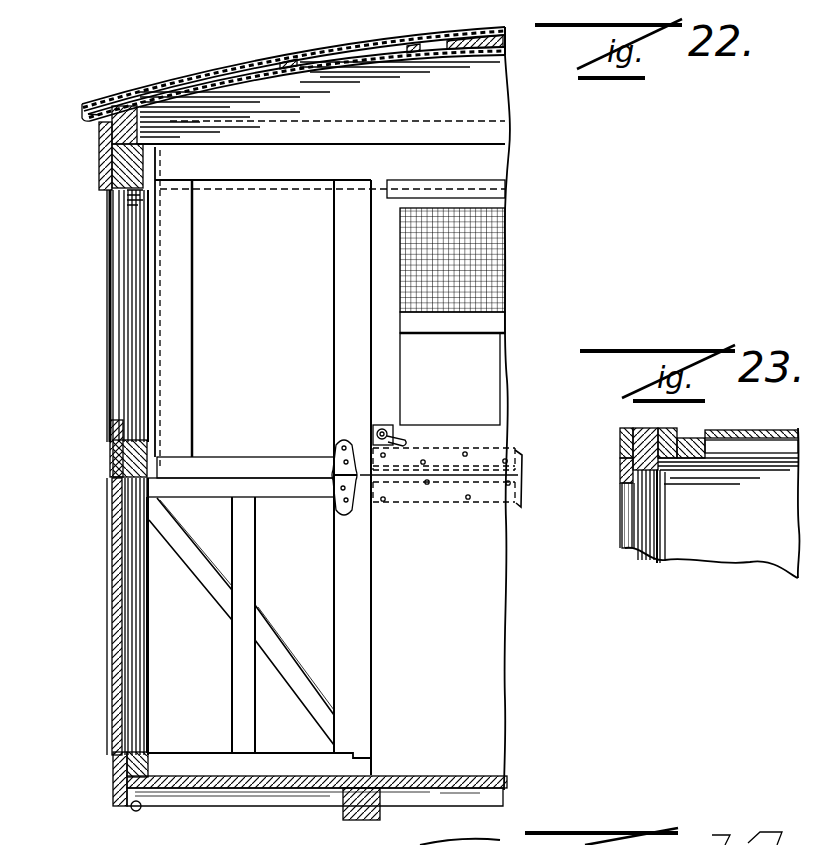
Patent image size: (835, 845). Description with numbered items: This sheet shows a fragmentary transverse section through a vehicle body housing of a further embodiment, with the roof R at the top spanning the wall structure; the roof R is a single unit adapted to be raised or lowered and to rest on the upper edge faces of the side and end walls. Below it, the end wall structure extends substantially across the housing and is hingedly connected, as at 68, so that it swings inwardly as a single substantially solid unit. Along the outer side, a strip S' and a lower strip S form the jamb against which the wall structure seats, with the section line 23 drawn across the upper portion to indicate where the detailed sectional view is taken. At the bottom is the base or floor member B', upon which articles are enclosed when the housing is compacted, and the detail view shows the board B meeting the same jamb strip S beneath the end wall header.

In FIG. 22, the roof R is at (217, 67).
In FIG. 22, the section line 23— 23 is at (78, 253).
In FIG. 22, the upper jamb screen strip S' is at (105, 316).
In FIG. 22, the hinge connection 68 is at (342, 452).
In FIG. 22, the jamb strip S is at (105, 616).
In FIG. 23, the jamb strip S is at (637, 536).
In FIG. 22, the base or floor member B' is at (317, 810).
In FIG. 23, the board B is at (712, 517).